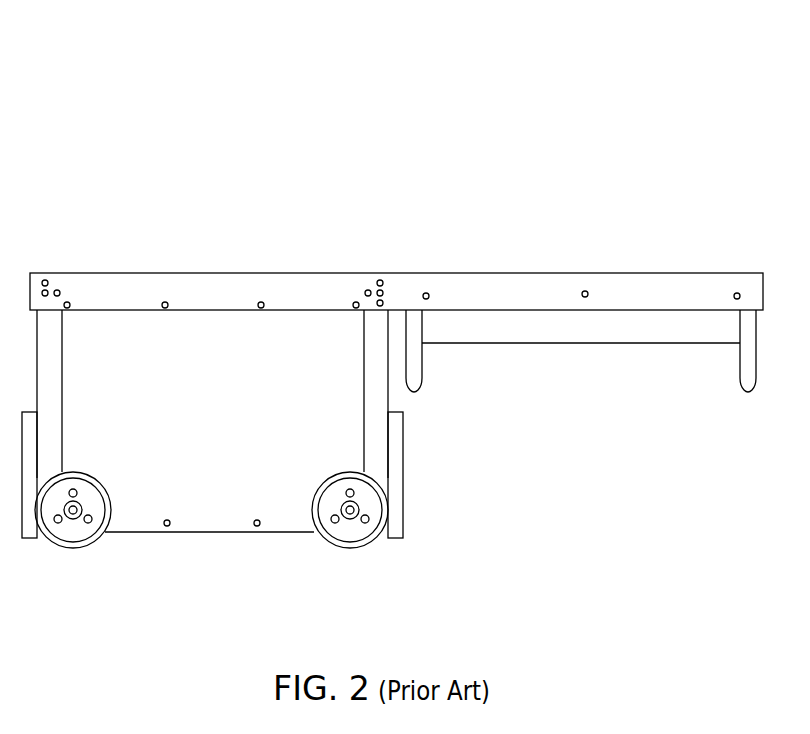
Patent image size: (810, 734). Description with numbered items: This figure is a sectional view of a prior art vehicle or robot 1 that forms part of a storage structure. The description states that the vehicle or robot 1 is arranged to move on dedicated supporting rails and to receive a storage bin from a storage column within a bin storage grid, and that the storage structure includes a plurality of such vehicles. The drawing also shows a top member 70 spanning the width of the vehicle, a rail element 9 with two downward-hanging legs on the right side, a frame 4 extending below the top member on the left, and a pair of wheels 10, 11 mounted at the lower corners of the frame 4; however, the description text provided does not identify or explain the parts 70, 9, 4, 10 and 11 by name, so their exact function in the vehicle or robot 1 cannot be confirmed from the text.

The vehicle or robot 1 is at (163, 115).
The mounting bar 70 is at (610, 293).
The guide rail 9 is at (574, 329).
The frame 4 is at (216, 494).
The wheel 10 is at (274, 527).
The wheel hub 11 is at (405, 475).